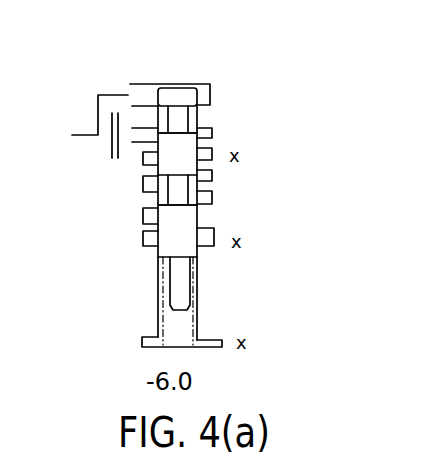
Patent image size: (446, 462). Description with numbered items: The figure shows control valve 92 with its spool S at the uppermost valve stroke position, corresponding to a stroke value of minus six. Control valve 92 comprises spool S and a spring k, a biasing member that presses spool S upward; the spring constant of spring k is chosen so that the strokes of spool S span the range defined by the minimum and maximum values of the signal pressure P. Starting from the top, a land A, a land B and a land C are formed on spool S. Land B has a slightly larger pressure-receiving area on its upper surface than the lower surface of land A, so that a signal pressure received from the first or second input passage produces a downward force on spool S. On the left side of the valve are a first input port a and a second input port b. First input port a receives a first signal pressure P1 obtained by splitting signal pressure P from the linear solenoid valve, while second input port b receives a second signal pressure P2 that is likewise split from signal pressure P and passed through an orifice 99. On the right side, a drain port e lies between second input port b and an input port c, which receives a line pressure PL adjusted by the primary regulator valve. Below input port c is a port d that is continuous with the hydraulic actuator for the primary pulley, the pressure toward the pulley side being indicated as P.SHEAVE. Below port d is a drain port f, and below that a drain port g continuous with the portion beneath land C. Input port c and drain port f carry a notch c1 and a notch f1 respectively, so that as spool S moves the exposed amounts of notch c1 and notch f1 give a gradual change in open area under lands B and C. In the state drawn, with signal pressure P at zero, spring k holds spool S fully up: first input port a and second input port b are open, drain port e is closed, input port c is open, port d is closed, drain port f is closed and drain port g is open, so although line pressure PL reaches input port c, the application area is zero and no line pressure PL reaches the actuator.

The spool S is at (214, 97).
The land A is at (182, 96).
The land B is at (180, 140).
The land C is at (163, 249).
The spring k is at (199, 303).
The drain port g is at (200, 349).
The input port c is at (210, 173).
The port d is at (213, 215).
The signal pressure P is at (77, 135).
The first signal pressure P1 is at (110, 95).
The second signal pressure P2 is at (132, 130).
The orifice 99 is at (115, 150).
The second input port b is at (140, 138).
The first input port a is at (139, 87).
The control valve 92 is at (222, 65).
The drain port e is at (223, 156).
The notch c1 is at (223, 196).
The line pressure PL is at (212, 178).
The sheave plane P.SHEAVE is at (213, 232).
The notch f1 is at (222, 233).
The drain port f is at (216, 242).